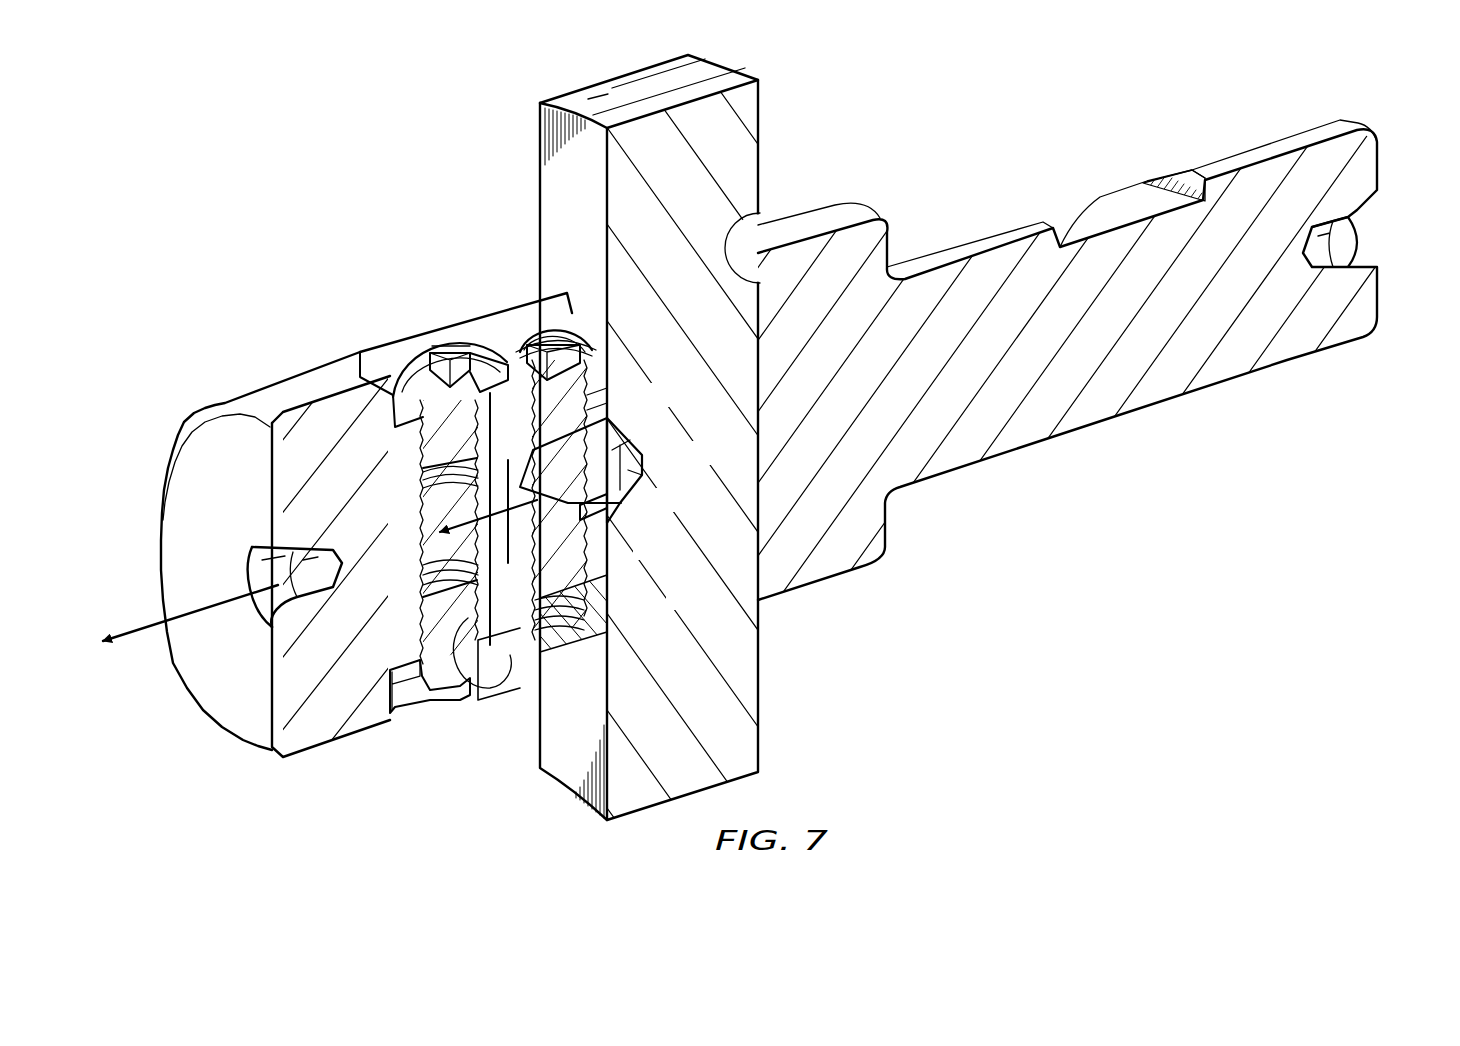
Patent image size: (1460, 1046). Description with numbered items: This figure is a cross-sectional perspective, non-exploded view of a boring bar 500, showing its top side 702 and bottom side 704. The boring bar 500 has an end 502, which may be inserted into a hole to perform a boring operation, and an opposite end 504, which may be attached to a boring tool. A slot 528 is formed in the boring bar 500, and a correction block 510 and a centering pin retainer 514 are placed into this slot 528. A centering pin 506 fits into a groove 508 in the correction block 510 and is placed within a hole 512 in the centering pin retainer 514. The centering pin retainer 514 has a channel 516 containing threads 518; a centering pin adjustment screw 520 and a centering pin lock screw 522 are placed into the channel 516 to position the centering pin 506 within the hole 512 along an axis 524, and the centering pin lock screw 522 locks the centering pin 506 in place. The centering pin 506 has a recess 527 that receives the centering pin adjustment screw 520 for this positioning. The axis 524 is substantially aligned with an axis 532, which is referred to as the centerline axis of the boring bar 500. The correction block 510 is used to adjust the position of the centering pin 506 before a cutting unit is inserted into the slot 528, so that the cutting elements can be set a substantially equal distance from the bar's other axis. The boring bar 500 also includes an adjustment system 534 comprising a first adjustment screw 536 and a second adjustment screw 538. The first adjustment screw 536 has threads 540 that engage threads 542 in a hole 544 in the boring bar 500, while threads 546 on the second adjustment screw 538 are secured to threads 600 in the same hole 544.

The boring bar 500 is at (901, 574).
The end 502 is at (243, 714).
The end 504 is at (1380, 167).
The centering pin 506 is at (628, 479).
The groove 508 is at (640, 443).
The correction block 510 is at (552, 172).
The hole 512 is at (612, 542).
The centering pin retainer 514 is at (582, 318).
The channel 516 is at (560, 300).
The threads 518 is at (605, 400).
The centering pin adjustment screw 520 is at (480, 338).
The centering pin lock screw 522 is at (548, 623).
The axis 524 is at (420, 539).
The recess 527 is at (582, 521).
The slot 528 is at (760, 203).
The axis 532 is at (153, 625).
The adjustment system 534 is at (456, 308).
The first adjustment screw 536 is at (410, 358).
The second adjustment screw 538 is at (418, 712).
The threads 540 is at (413, 447).
The threads 542 is at (403, 484).
The hole 544 is at (385, 363).
The threads 546 is at (418, 636).
The threads 600 is at (495, 688).
The top side 702 is at (1013, 232).
The bottom side 704 is at (1130, 408).